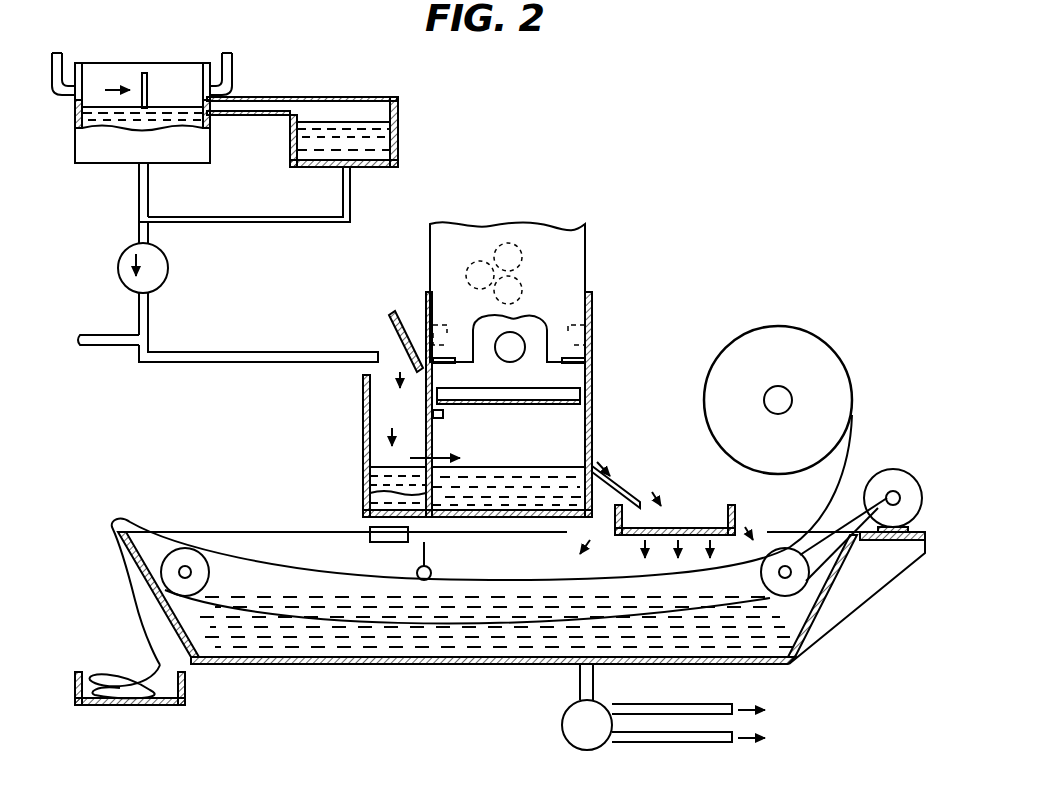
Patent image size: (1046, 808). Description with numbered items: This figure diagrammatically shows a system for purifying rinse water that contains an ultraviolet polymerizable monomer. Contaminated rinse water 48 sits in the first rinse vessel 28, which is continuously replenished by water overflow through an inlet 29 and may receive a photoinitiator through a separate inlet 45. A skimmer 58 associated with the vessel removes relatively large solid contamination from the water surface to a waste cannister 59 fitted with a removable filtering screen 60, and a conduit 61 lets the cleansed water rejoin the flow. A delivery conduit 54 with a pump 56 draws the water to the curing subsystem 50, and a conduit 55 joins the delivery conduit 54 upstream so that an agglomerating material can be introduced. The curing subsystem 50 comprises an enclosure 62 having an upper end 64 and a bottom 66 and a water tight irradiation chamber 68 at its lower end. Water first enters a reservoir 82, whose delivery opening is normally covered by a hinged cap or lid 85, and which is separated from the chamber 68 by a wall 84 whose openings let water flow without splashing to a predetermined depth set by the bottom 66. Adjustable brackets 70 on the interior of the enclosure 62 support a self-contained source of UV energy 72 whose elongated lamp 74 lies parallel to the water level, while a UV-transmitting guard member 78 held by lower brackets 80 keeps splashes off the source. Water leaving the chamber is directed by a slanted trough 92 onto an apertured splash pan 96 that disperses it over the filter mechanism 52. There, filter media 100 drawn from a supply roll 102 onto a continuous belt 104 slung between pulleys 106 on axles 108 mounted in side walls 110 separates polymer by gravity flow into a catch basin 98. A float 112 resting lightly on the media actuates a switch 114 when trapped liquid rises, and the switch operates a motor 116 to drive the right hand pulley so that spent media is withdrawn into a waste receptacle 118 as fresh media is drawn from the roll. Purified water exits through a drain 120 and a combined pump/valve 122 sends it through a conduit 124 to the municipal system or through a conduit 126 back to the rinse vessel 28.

The first rinse vessel 28 is at (210, 138).
The inlet 29 is at (234, 76).
The inlet 45 is at (58, 55).
The contaminated rinse water 48 is at (182, 105).
The curing subsystem 50 is at (608, 329).
The filter mechanism 52 is at (194, 508).
The delivery conduit 54 is at (138, 315).
The conduit 55 is at (115, 347).
The pump 56 is at (169, 266).
The skimmer 58 is at (148, 80).
The waste cannister 59 is at (398, 113).
The filtering screen 60 is at (358, 121).
The conduit 61 is at (297, 223).
The enclosure 62 is at (596, 420).
The upper end 64 is at (593, 293).
The bottom 66 is at (533, 518).
The irradiation chamber 68 is at (568, 440).
The brackets 70 is at (593, 362).
The source of UV energy 72 is at (565, 232).
The lamp 74 is at (498, 337).
The guard member 78 is at (583, 393).
The lower brackets 80 is at (443, 413).
The reservoir 82 is at (365, 450).
The wall 84 is at (365, 497).
The cap or lid 85 is at (394, 313).
The trough 92 is at (630, 490).
The splash pan 96 is at (737, 506).
The catch basin 98 is at (287, 664).
The filter media 100 is at (275, 558).
The supply roll 102 is at (832, 358).
The continuous belt 104 is at (457, 588).
The pulleys 106 is at (172, 560).
The axles 108 is at (182, 576).
The side walls 110 is at (357, 645).
The float 112 is at (432, 570).
The switch 114 is at (410, 534).
The motor 116 is at (897, 470).
The waste receptacle 118 is at (128, 706).
The drain 120 is at (582, 683).
The pump/valve 122 is at (575, 745).
The conduit 124 is at (665, 704).
The conduit 126 is at (668, 744).